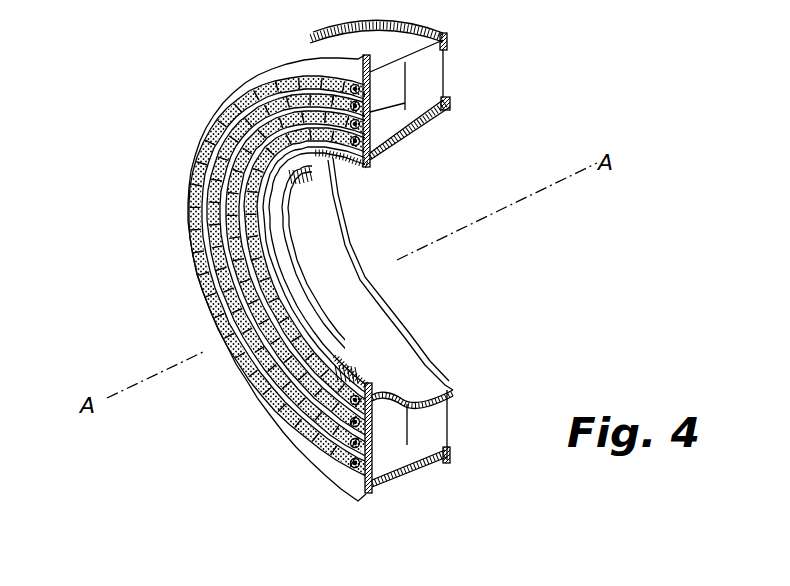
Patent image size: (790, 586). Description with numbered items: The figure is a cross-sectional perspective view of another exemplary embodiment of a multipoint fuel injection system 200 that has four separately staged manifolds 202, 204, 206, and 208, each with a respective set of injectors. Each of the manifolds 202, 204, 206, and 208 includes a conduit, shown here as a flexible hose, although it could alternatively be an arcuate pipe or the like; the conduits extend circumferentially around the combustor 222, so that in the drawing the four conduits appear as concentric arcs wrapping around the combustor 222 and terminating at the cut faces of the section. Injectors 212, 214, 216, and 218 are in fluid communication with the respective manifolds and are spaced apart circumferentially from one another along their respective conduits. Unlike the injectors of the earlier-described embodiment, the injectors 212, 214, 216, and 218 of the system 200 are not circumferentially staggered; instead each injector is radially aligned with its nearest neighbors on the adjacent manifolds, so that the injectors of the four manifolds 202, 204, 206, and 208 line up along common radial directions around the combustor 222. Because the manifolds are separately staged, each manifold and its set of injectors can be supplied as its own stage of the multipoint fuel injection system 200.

The multipoint fuel injection system 200 is at (201, 278).
The manifold 202 is at (412, 462).
The manifold 204 is at (398, 458).
The manifold 206 is at (372, 465).
The manifold 208 is at (357, 492).
The injectors 212 is at (322, 400).
The injectors 214 is at (317, 428).
The injectors 216 is at (320, 460).
The injectors 218 is at (330, 470).
The combustor 222 is at (267, 60).